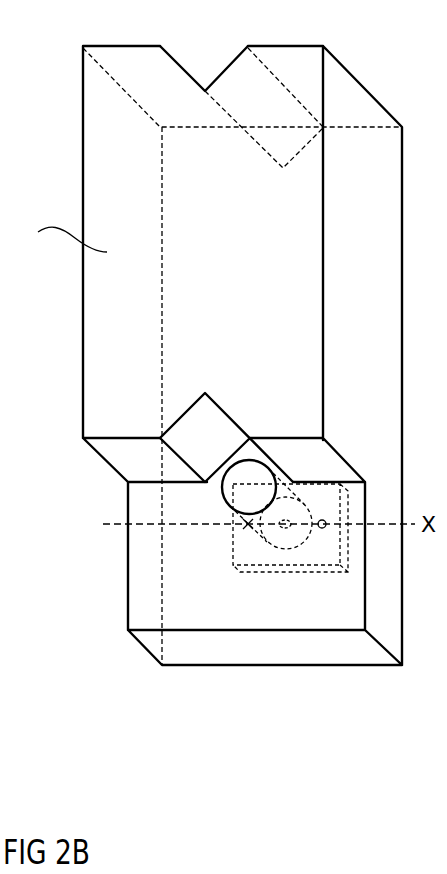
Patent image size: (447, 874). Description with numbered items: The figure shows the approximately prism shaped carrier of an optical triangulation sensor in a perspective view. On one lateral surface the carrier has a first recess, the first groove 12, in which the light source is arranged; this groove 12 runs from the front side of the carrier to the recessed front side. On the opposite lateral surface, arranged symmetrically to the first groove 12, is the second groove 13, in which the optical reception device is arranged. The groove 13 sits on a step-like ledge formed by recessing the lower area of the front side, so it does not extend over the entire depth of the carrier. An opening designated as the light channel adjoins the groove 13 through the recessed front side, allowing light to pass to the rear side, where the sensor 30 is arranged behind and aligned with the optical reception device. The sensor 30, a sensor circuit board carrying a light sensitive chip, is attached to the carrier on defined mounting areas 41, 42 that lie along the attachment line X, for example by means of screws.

The first groove 12 is at (227, 72).
The groove 13 is at (231, 420).
The sensor 30 is at (243, 557).
The mounting area 41 is at (323, 520).
The mounting area 42 is at (247, 527).